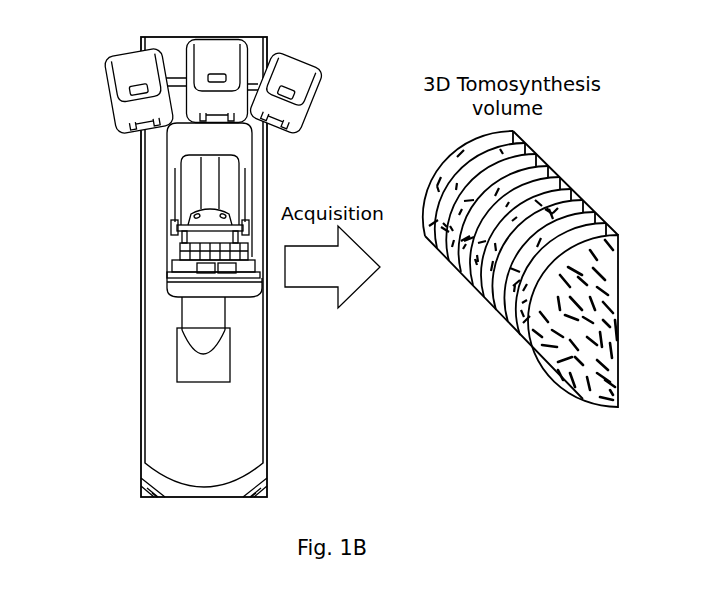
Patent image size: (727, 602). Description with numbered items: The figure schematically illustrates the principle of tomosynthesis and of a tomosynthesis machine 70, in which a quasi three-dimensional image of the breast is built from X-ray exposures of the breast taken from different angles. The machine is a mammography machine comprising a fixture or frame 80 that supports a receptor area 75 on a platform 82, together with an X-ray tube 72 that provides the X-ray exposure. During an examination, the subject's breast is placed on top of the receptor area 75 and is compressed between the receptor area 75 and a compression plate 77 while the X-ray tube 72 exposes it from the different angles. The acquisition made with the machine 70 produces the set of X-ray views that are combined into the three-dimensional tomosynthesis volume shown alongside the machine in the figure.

The tomosynthesis machine 70 is at (125, 440).
The X-ray tube 72 is at (119, 65).
The receptor area 75 is at (172, 270).
The compression plate 77 is at (176, 213).
The frame 80 is at (175, 261).
The platform 82 is at (230, 297).